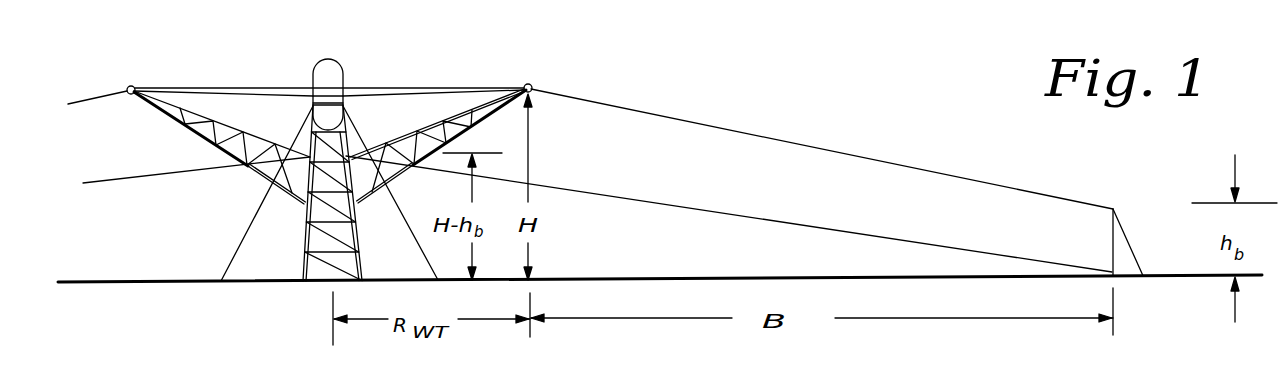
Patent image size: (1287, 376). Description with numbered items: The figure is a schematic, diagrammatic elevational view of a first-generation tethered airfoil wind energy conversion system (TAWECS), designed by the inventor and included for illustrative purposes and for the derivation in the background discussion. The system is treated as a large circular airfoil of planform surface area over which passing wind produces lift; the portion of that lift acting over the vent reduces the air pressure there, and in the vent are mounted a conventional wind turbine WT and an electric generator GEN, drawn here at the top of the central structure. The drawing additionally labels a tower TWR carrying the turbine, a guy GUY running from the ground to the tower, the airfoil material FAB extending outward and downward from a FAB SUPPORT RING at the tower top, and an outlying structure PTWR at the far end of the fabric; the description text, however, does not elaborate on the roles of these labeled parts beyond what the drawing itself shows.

The electric generator GEN is at (312, 74).
The wind turbine WT is at (378, 87).
The fabric support ring FAB SUPPORT RING is at (533, 86).
The fabric (FAB) lines FAB is at (785, 143).
The post tower PTWR is at (1113, 243).
The tower TWR is at (306, 221).
The guy wire GUY is at (228, 270).